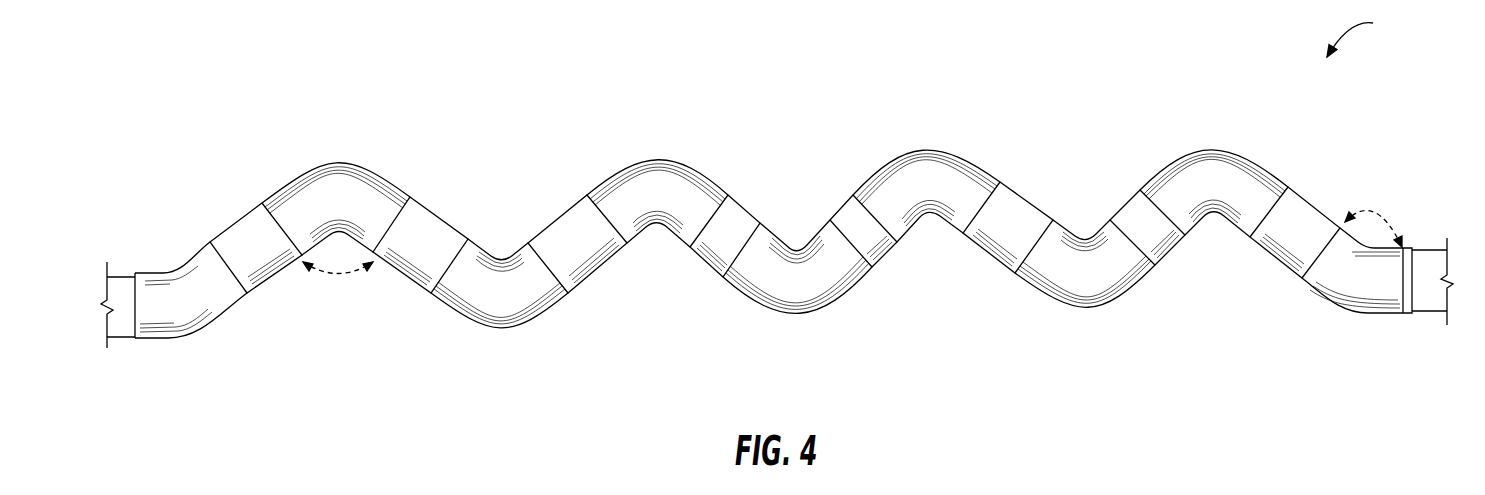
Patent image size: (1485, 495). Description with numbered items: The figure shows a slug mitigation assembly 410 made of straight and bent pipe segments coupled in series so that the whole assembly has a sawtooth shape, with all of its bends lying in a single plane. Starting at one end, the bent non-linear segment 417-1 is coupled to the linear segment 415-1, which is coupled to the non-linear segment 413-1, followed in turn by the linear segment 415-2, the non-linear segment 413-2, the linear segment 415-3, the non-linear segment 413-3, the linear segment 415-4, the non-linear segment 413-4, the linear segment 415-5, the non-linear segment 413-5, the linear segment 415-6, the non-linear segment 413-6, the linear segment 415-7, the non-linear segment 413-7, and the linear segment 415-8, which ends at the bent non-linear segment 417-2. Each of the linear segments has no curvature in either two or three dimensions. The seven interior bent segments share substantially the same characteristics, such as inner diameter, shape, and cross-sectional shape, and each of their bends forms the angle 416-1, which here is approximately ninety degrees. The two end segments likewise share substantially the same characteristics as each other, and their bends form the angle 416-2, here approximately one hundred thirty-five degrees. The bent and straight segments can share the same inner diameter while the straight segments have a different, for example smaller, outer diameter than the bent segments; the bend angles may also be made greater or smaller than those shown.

The slug mitigation assembly 410 is at (1374, 33).
The non-linear segment 413-1 is at (333, 168).
The non-linear segment 413-2 is at (495, 320).
The non-linear segment 413-3 is at (637, 172).
The non-linear segment 413-4 is at (795, 303).
The non-linear segment 413-5 is at (915, 155).
The non-linear segment 413-6 is at (1092, 298).
The non-linear segment 413-7 is at (1200, 153).
The linear segment 415-1 is at (245, 230).
The linear segment 415-2 is at (422, 217).
The linear segment 415-3 is at (570, 228).
The linear segment 415-4 is at (705, 260).
The linear segment 415-5 is at (850, 215).
The linear segment 415-6 is at (1000, 245).
The linear segment 415-7 is at (1162, 247).
The linear segment 415-8 is at (1302, 207).
The angle 416-1 is at (338, 273).
The angle 416-2 is at (1377, 215).
The non-linear segment 417-1 is at (178, 328).
The non-linear segment 417-2 is at (1352, 298).